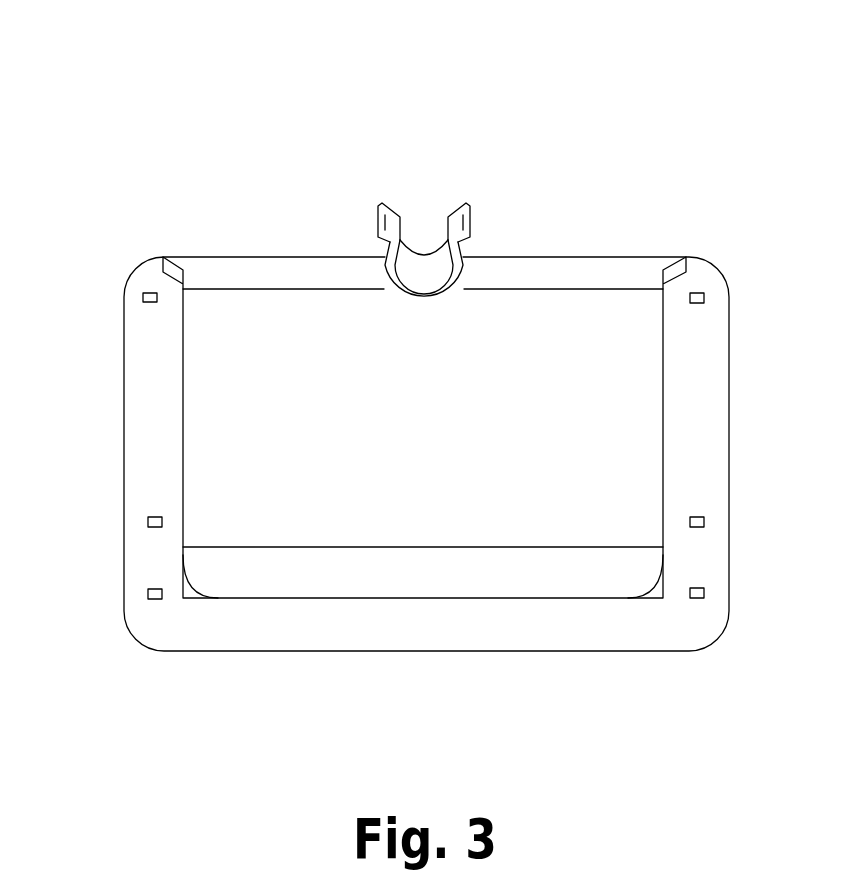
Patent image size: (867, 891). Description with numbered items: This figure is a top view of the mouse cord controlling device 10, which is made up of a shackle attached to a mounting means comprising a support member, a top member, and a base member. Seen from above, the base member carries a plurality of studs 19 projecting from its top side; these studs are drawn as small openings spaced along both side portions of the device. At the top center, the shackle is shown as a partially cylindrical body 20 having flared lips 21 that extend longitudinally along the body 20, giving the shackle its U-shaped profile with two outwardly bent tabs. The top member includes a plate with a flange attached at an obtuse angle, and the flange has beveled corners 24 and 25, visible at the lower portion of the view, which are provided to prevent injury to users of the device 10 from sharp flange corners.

The mouse cord controlling device 10 is at (652, 201).
The studs 19 is at (147, 593).
The partially cylindrical body 20 is at (420, 312).
The flared lips 21 is at (377, 223).
The beveled corner 24 is at (610, 598).
The beveled corner 25 is at (227, 588).